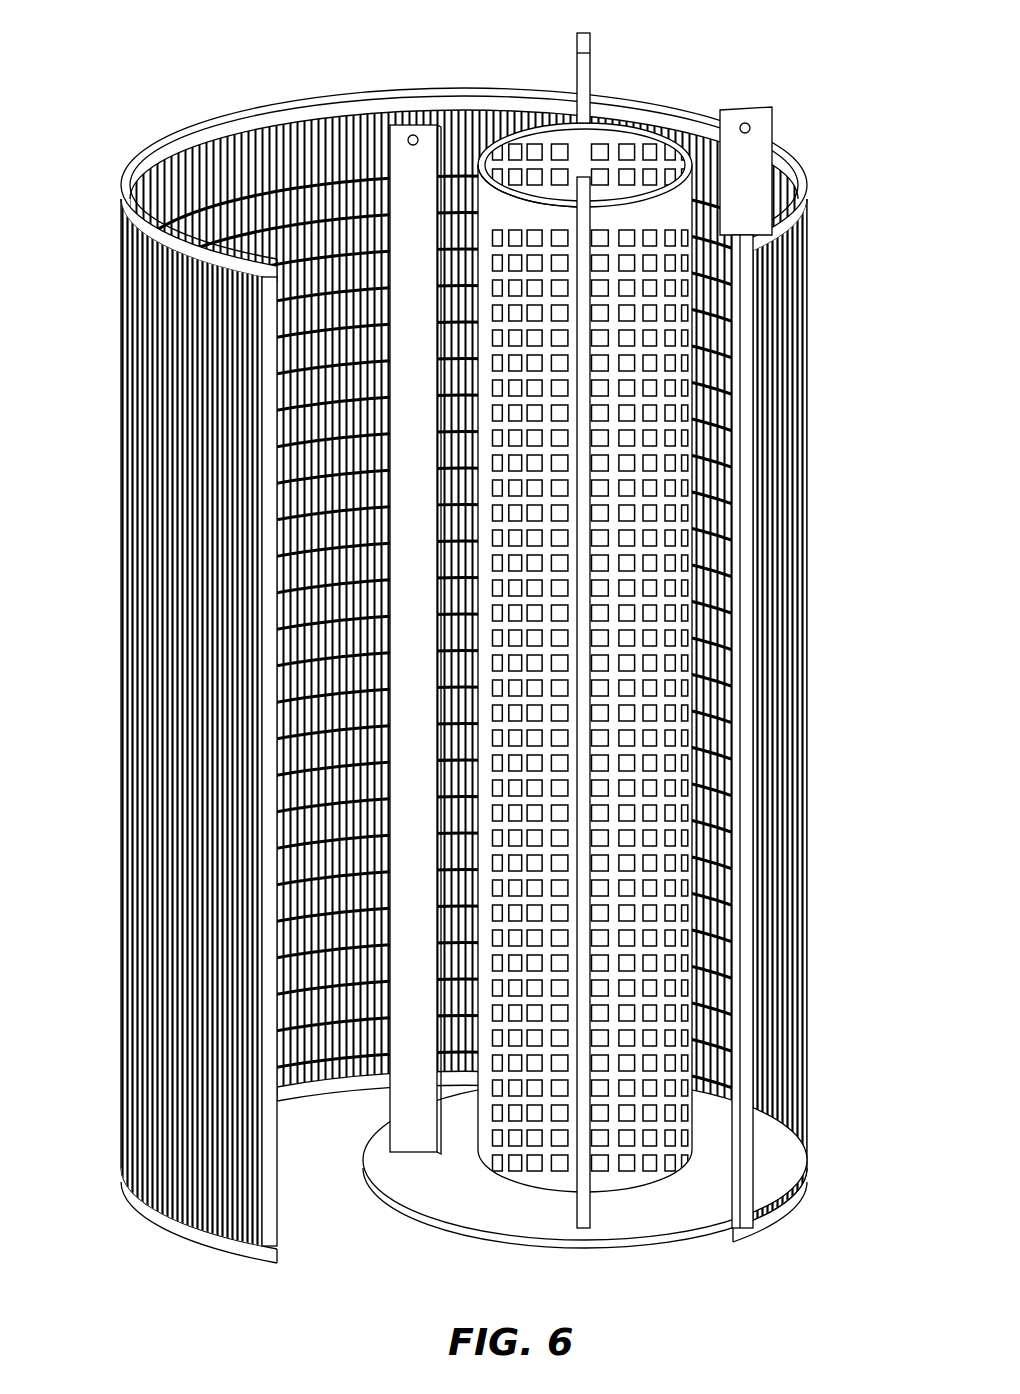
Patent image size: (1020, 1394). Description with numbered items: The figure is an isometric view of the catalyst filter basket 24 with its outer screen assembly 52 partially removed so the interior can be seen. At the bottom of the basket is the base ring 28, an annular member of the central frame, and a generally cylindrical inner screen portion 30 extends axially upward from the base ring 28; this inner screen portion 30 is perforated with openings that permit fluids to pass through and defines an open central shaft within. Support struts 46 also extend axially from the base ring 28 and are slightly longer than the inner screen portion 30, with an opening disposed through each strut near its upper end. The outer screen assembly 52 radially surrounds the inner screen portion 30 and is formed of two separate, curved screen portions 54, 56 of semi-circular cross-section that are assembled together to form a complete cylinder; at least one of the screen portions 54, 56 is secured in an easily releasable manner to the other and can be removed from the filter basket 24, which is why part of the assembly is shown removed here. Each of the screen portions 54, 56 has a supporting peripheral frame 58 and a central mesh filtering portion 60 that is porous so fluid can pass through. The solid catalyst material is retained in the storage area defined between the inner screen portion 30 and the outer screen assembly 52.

The catalyst filter basket 24 is at (478, 672).
The base ring 28 is at (449, 1234).
The inner screen portion 30 is at (517, 125).
The support struts 46 is at (594, 58).
The outer screen assembly 52 is at (478, 674).
The screen portion 54 is at (127, 530).
The screen portion 56 is at (812, 497).
The peripheral frame 58 is at (700, 98).
The central mesh filtering portion 60 is at (225, 172).